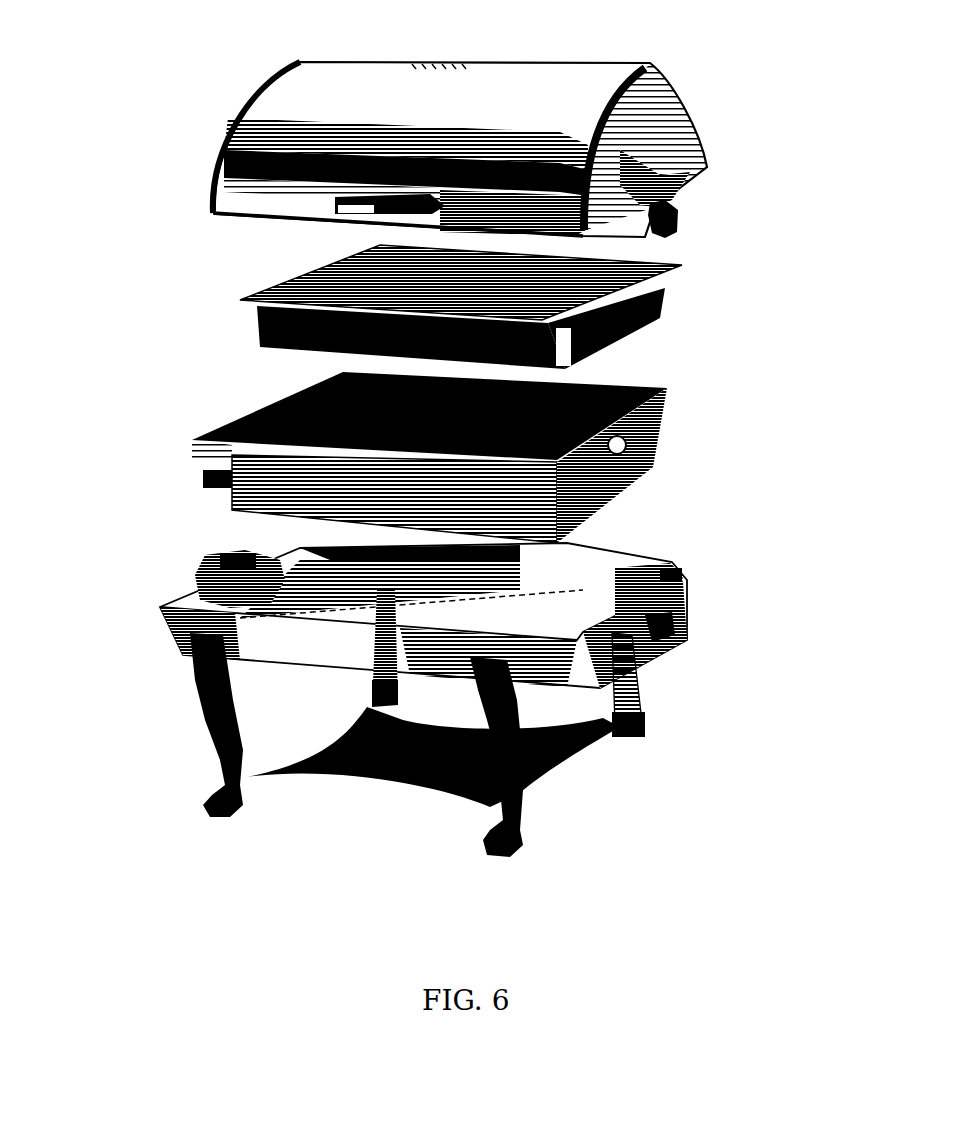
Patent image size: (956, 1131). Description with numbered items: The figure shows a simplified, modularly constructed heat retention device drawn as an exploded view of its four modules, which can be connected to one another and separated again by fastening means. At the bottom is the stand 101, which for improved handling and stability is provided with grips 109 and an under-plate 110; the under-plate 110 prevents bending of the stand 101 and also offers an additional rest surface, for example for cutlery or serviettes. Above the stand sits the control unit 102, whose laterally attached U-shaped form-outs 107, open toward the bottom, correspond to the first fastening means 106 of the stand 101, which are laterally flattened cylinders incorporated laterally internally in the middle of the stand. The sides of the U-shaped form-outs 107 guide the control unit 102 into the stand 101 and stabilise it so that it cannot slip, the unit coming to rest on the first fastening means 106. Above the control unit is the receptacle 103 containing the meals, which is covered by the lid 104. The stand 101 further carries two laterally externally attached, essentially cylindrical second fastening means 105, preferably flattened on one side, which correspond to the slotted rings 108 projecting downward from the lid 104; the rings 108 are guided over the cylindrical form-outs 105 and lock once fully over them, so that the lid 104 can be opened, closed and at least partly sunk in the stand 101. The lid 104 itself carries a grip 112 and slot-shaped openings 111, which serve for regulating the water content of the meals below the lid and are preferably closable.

The stand 101 is at (247, 643).
The control unit 102 is at (230, 432).
The receptacle 103 is at (258, 295).
The lid 104 is at (312, 86).
The second fastening means 105 is at (660, 633).
The first fastening means 106 is at (195, 598).
The U-shaped form-outs 107 is at (630, 440).
The slotted rings 108 is at (677, 222).
The grips 109 is at (225, 557).
The under-plate 110 is at (540, 773).
The openings 111 is at (477, 62).
The grip 112 is at (340, 214).